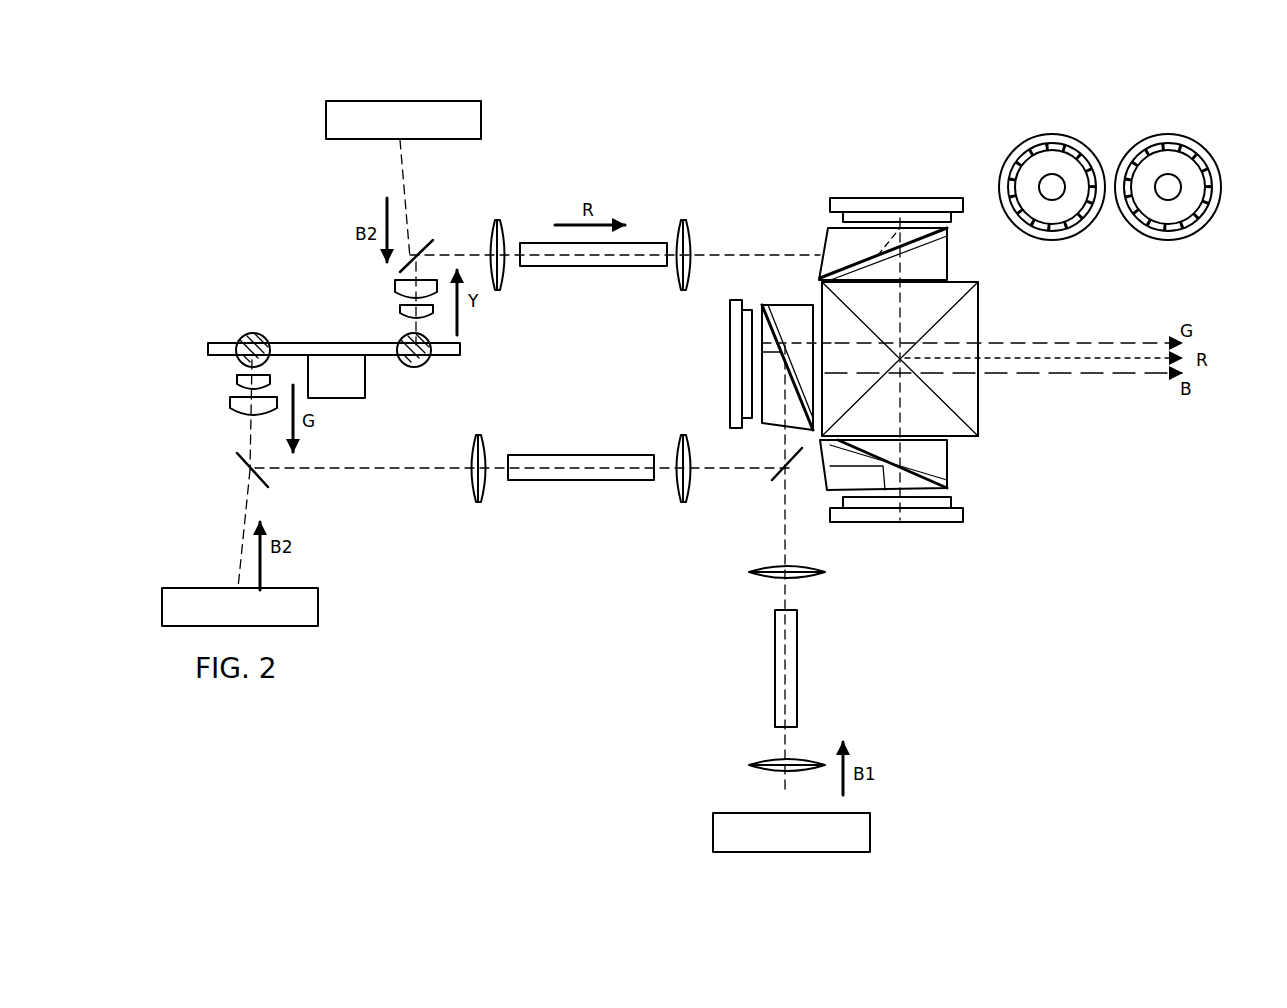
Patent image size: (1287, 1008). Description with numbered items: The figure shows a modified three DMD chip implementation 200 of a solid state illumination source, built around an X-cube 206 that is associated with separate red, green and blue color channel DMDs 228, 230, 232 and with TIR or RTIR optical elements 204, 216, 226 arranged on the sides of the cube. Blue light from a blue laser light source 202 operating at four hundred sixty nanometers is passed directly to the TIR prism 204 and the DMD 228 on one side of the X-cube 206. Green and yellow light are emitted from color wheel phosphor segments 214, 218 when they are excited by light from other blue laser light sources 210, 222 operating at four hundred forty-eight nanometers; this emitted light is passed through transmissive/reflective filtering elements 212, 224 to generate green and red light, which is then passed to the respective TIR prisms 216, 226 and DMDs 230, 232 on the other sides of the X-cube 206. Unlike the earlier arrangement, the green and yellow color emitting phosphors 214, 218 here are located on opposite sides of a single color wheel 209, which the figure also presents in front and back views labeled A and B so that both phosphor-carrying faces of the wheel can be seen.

The modified three DMD chip implementation 200 is at (570, 100).
The blue laser light source 202 is at (872, 832).
The TIR prism 204 is at (820, 473).
The X-cube 206 is at (978, 398).
The color wheel 209 is at (378, 357).
The blue laser light source 210 is at (162, 600).
The transmissive/reflective element 212 is at (243, 462).
The color wheel phosphor segment 214 is at (237, 370).
The TIR prism 216 is at (770, 425).
The color wheel phosphor segment 218 is at (237, 340).
The blue laser light source 222 is at (326, 118).
The transmissive/reflective element 224 is at (435, 244).
The TIR prism 226 is at (822, 245).
The DMD 228 is at (900, 522).
The DMD 230 is at (730, 366).
The DMD 232 is at (900, 198).